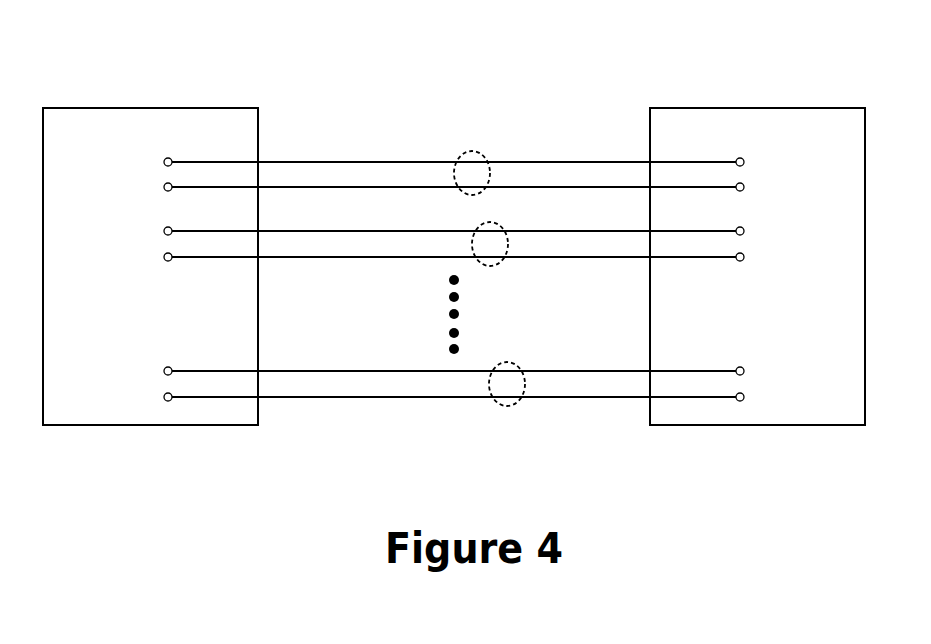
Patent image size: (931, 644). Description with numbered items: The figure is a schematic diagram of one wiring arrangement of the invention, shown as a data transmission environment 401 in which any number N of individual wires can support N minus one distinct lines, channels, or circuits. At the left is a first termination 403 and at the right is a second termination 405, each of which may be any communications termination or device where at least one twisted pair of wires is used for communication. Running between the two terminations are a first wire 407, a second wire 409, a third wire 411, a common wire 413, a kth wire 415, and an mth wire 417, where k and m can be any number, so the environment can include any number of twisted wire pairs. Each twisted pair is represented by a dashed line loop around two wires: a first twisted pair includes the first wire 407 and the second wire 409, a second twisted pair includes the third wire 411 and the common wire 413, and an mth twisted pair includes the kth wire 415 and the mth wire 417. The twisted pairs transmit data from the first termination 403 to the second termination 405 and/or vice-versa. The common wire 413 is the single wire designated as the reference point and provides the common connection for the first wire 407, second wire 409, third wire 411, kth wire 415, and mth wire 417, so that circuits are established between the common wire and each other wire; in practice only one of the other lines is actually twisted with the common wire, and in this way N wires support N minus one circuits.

The data transmission environment 401 is at (366, 51).
The first termination 403 is at (132, 433).
The second termination 405 is at (757, 433).
The first wire 407 is at (162, 162).
The second wire 409 is at (162, 187).
The third wire 411 is at (162, 231).
The common wire 413 is at (162, 257).
The kth wire 415 is at (161, 370).
The mth wire 417 is at (162, 399).